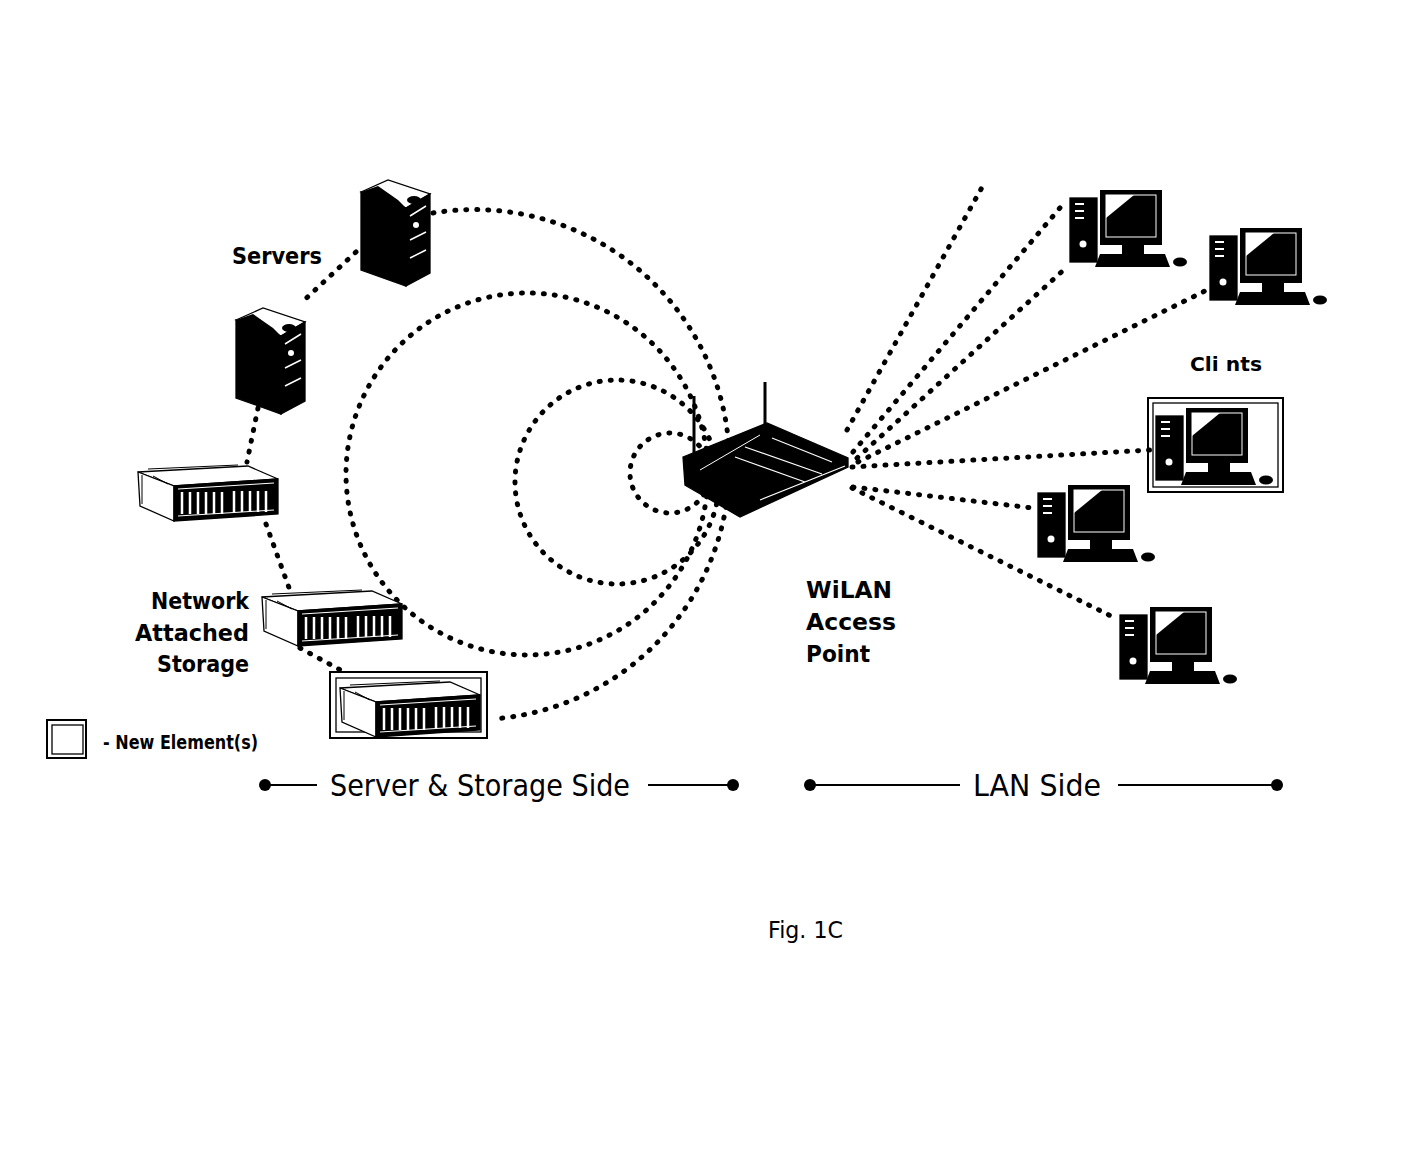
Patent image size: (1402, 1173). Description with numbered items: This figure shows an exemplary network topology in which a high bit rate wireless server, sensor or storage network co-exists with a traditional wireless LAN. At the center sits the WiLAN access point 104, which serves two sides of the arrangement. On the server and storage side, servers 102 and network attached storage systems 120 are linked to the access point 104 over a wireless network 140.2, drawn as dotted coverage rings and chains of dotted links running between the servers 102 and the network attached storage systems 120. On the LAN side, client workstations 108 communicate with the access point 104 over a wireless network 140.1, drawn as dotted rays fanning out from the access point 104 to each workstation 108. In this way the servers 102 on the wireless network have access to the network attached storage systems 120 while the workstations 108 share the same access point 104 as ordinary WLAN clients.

The servers 102 is at (398, 182).
The access point 104 is at (796, 430).
The workstations 108 is at (1163, 200).
The network attached storage systems 120 is at (183, 468).
The wireless network 140.1 is at (1003, 563).
The wireless network 140.2 is at (647, 673).